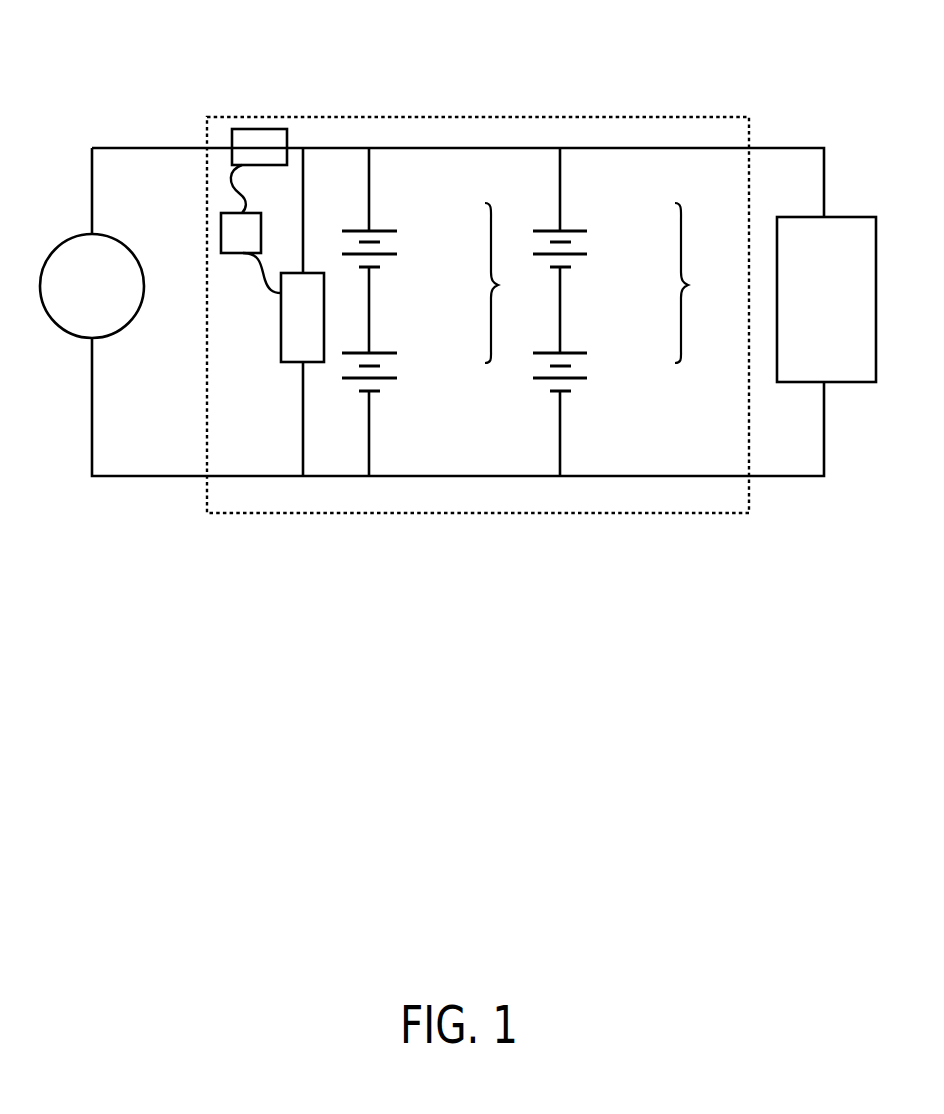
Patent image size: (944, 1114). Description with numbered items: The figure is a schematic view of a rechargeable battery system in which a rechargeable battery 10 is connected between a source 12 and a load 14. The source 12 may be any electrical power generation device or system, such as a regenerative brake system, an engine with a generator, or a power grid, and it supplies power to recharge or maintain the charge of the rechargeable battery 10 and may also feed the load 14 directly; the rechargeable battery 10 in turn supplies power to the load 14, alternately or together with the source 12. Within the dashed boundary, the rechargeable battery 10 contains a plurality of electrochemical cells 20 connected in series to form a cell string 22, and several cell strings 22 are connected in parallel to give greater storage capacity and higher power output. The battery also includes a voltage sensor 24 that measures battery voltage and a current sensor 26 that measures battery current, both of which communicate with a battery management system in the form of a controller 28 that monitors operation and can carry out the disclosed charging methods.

The rechargeable battery 10 is at (231, 88).
The source 12 is at (92, 286).
The load 14 is at (826, 299).
The electrochemical cell 20 is at (395, 253).
The cell string 22 is at (609, 283).
The voltage sensor 24 is at (281, 326).
The current sensor 26 is at (252, 165).
The controller 28 is at (221, 242).